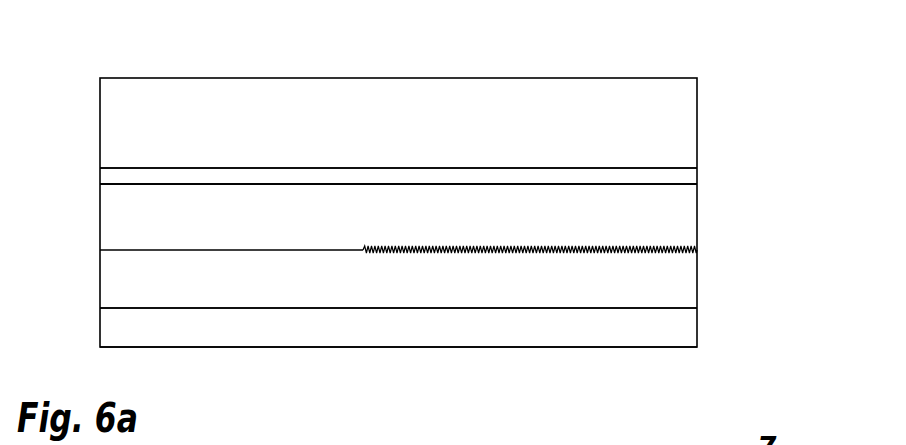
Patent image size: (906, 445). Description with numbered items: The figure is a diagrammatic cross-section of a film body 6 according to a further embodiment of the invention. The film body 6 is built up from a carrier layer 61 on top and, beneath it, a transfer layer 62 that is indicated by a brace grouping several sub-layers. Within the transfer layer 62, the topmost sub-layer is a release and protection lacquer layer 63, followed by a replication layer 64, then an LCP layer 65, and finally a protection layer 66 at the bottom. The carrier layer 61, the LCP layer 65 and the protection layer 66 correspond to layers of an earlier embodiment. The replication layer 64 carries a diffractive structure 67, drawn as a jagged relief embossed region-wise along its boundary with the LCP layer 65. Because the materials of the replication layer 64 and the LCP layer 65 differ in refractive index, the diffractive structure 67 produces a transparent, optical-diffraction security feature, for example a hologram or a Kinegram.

The film body 6 is at (699, 70).
The carrier layer 61 is at (107, 125).
The transfer layer 62 is at (97, 169).
The release and protection lacquer layer 63 is at (686, 178).
The replication layer 64 is at (686, 228).
The LCP layer 65 is at (686, 278).
The protection layer 66 is at (686, 327).
The diffractive structure 67 is at (509, 244).